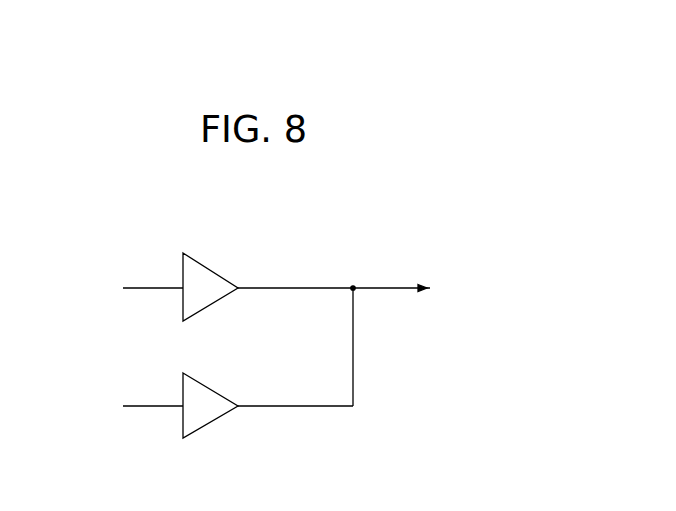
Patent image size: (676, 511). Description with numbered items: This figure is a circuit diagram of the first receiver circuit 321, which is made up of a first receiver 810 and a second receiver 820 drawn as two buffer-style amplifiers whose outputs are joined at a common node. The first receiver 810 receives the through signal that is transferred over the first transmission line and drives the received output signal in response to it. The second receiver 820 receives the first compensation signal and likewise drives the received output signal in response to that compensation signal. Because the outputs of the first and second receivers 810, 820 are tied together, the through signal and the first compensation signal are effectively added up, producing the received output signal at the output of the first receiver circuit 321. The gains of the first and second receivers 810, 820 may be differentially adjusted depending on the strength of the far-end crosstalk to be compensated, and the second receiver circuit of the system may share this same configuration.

The first receiver circuit 321 is at (468, 222).
The first receiver 810 is at (213, 270).
The second receiver 820 is at (213, 389).